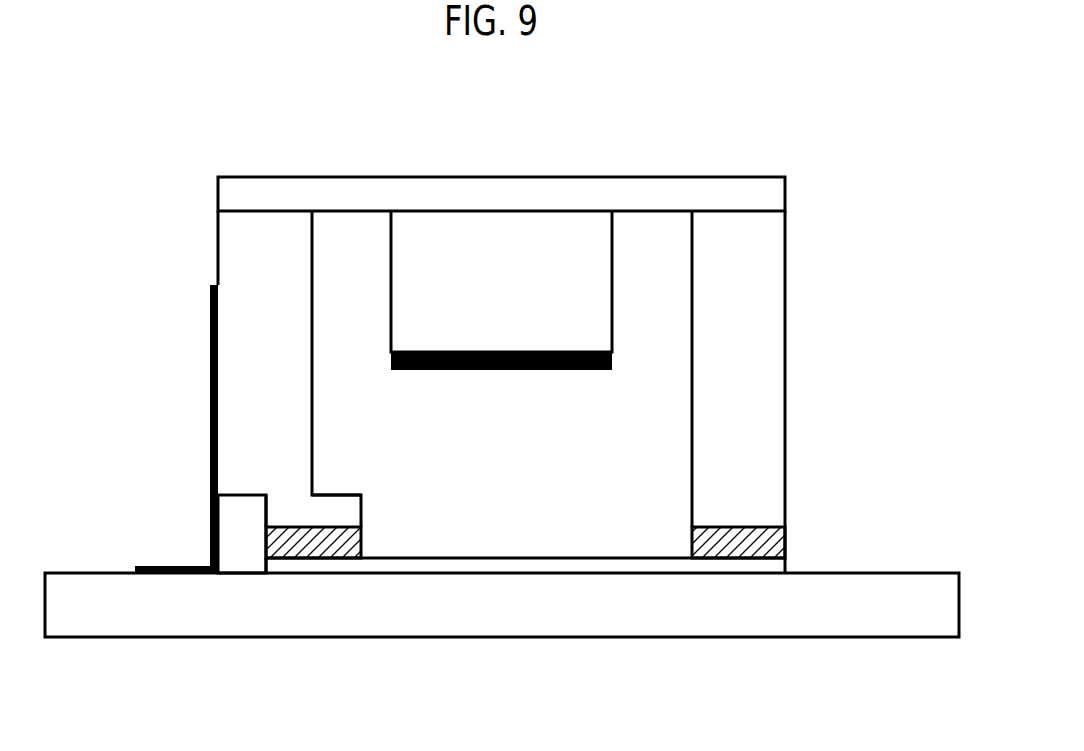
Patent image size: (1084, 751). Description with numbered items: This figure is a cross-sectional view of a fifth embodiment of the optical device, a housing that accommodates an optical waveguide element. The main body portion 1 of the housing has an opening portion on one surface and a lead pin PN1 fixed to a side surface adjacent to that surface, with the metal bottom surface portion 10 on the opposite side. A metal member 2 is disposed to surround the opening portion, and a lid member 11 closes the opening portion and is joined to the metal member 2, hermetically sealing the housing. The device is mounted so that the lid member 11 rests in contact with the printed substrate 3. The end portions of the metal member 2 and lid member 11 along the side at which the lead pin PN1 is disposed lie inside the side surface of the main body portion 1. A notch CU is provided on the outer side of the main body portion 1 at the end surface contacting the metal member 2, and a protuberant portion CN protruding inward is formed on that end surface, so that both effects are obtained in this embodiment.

The main body portion 1 is at (747, 322).
The metal member 2 is at (316, 542).
The printed substrate 3 is at (860, 605).
The bottom surface portion 10 is at (722, 196).
The lid member 11 is at (610, 565).
The notch CU is at (242, 495).
The lead pin PN1 is at (210, 527).
The protuberant portion CN is at (333, 513).